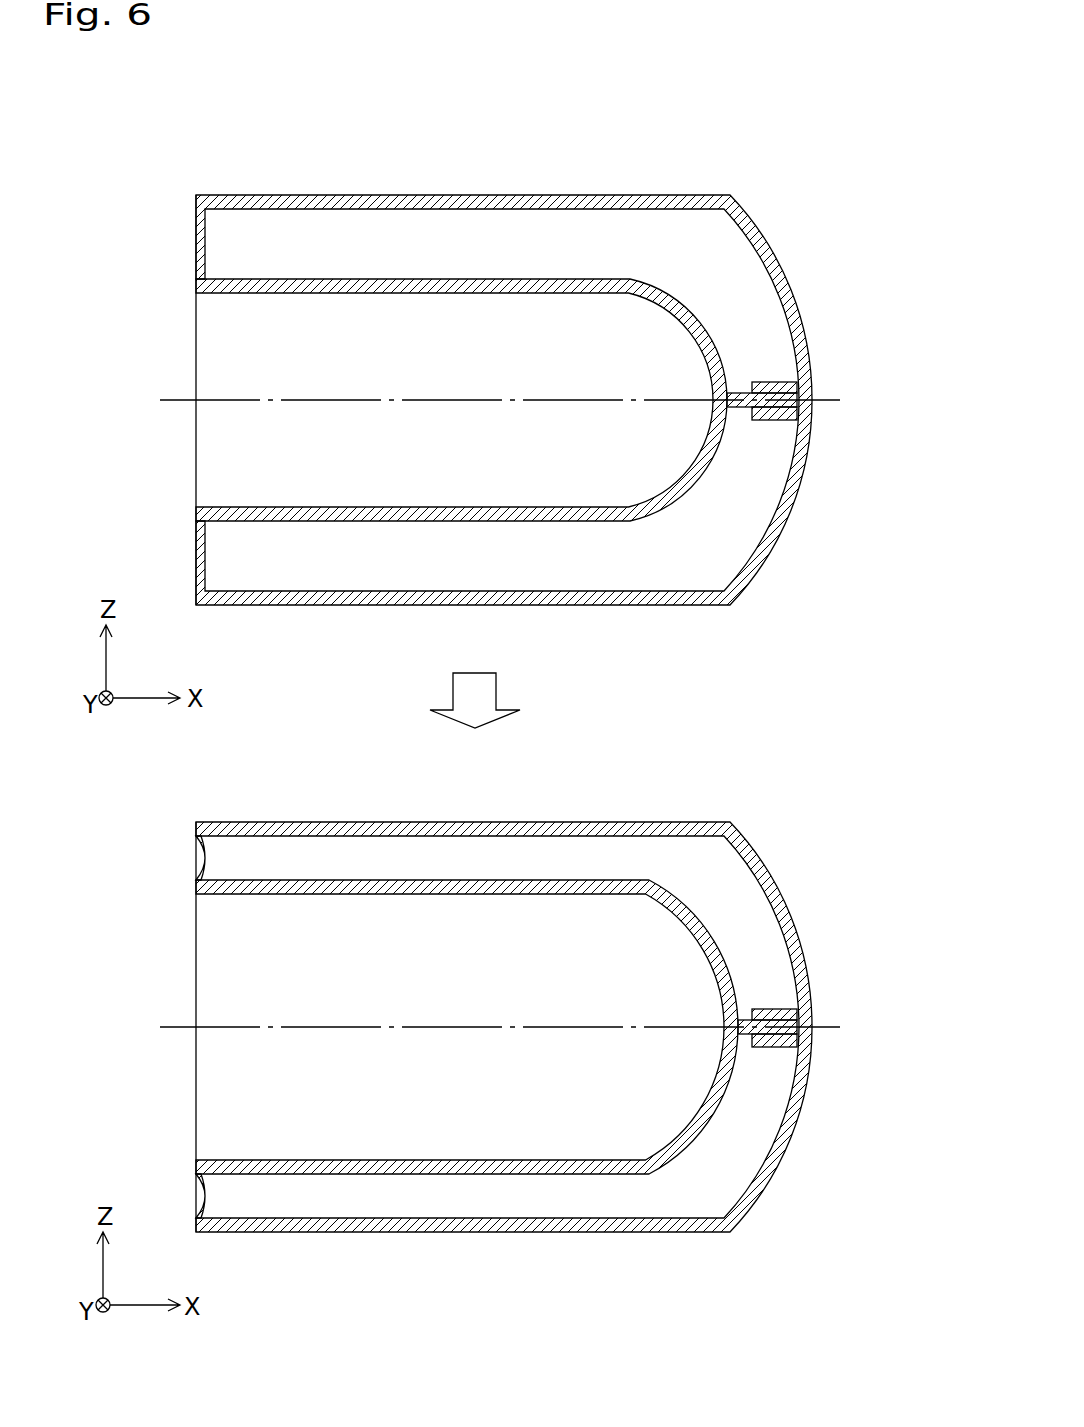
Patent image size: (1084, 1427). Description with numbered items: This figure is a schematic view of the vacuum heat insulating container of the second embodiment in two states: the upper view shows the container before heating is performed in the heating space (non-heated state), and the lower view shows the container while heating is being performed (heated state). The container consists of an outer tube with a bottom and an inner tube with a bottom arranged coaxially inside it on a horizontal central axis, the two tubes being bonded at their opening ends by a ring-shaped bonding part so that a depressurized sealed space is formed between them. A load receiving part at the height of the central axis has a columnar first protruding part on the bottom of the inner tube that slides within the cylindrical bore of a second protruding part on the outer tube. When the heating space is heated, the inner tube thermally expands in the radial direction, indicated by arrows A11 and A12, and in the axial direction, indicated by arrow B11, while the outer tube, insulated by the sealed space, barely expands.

The arrow indicating radial thermal expansion A11 is at (482, 872).
The arrow indicating radial thermal expansion A12 is at (483, 1185).
The arrow indicating axial thermal expansion B11 is at (492, 921).